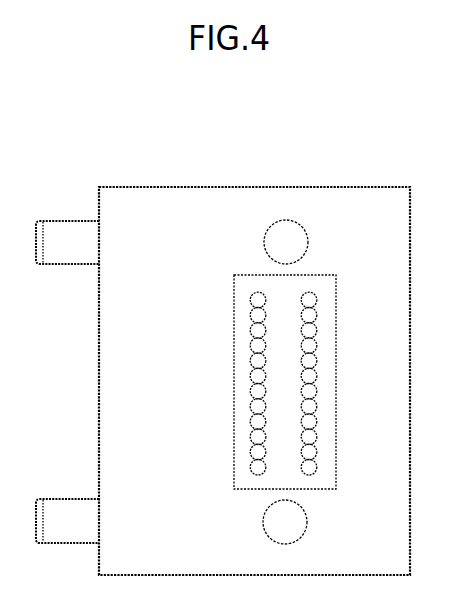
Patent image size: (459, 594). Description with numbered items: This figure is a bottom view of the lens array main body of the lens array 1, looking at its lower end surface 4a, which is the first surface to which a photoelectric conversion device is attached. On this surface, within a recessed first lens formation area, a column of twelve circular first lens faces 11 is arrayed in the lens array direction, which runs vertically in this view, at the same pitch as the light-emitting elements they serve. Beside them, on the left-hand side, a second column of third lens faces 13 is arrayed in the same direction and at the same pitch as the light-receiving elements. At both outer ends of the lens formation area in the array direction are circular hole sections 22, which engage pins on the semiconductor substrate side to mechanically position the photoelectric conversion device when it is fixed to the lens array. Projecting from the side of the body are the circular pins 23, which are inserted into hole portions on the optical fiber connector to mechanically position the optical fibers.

The lens array 1 is at (41, 158).
The lower end surface 4a is at (240, 440).
The first lens faces 11 is at (316, 360).
The third lens faces 13 is at (252, 360).
The hole sections 22 is at (265, 246).
The pins 23 is at (52, 265).